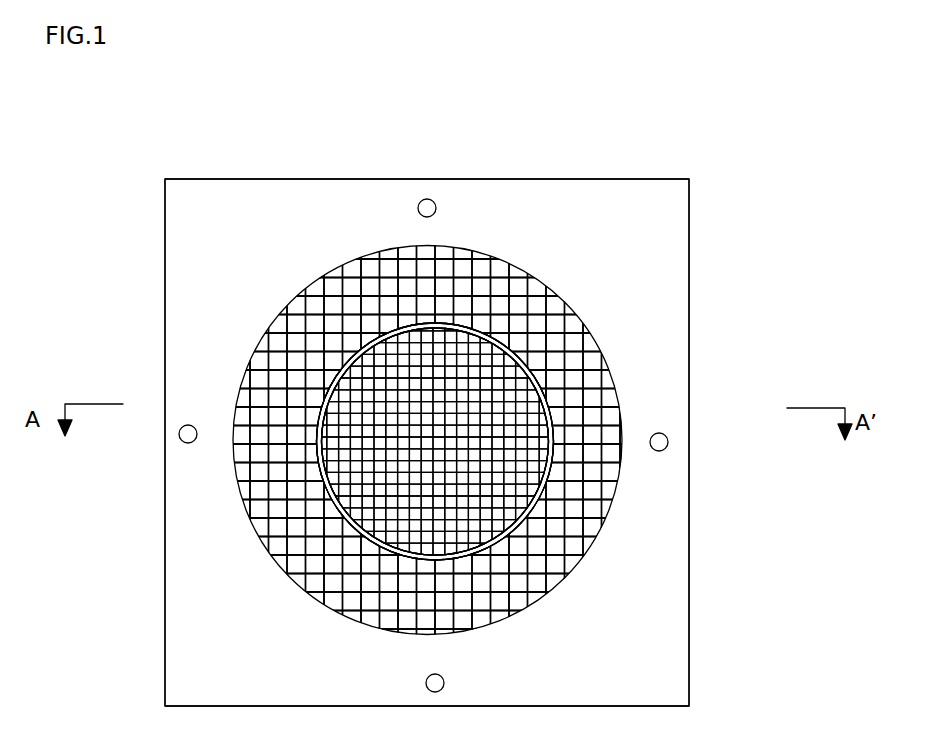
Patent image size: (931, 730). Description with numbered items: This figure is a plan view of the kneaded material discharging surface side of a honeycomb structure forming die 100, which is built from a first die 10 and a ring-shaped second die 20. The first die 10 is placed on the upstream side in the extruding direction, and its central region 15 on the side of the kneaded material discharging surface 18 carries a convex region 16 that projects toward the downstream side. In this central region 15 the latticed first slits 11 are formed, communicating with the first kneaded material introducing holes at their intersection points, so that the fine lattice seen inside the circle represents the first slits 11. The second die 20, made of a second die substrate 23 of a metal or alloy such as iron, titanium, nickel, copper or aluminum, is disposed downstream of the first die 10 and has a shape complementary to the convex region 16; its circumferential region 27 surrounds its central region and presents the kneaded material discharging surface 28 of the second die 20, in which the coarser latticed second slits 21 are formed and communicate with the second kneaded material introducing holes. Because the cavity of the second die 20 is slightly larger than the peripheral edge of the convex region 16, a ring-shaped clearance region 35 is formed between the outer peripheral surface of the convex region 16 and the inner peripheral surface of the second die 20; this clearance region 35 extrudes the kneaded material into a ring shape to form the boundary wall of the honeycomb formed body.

The honeycomb structure forming die 100 is at (766, 125).
The second die substrate 23 is at (635, 275).
The circumferential region 27 is at (273, 413).
The second die 20 is at (603, 416).
The second slit 21 is at (570, 537).
The kneaded material discharging surface 28 is at (337, 322).
The first die 10 is at (517, 383).
The first slit 11 is at (505, 493).
The convex region 16 is at (480, 353).
The kneaded material discharging surface 18 is at (408, 360).
The central region 15 is at (352, 393).
The clearance region 35 is at (506, 530).